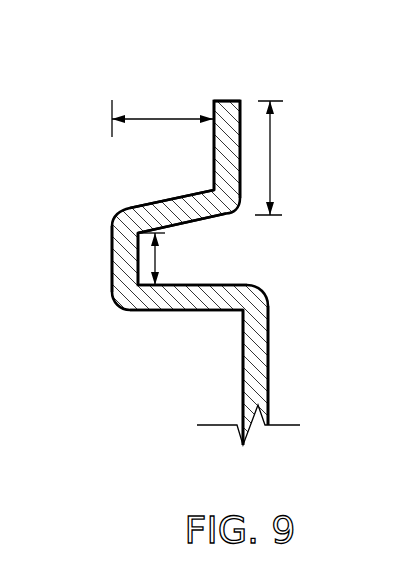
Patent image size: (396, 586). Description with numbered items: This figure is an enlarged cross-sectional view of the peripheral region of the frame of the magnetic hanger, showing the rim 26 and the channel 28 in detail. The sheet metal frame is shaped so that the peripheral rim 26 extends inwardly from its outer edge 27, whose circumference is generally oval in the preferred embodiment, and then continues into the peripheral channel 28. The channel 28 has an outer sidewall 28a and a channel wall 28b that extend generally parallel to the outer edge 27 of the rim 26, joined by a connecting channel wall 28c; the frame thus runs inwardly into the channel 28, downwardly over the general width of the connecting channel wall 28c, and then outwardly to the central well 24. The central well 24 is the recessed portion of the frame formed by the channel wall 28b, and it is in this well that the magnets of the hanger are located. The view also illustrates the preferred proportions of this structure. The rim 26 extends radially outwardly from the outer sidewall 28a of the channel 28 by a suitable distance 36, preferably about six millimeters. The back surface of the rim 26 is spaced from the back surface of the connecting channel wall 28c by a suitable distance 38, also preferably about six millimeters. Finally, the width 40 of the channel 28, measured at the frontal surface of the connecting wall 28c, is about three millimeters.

The central well 24 is at (242, 383).
The peripheral rim 26 is at (213, 133).
The outer edge 27 is at (226, 101).
The peripheral channel 28 is at (206, 222).
The outer sidewall 28a is at (186, 226).
The channel wall 28b is at (183, 279).
The connecting channel wall 28c is at (152, 257).
The distance 36 is at (271, 157).
The distance 38 is at (157, 108).
The width 40 is at (150, 256).